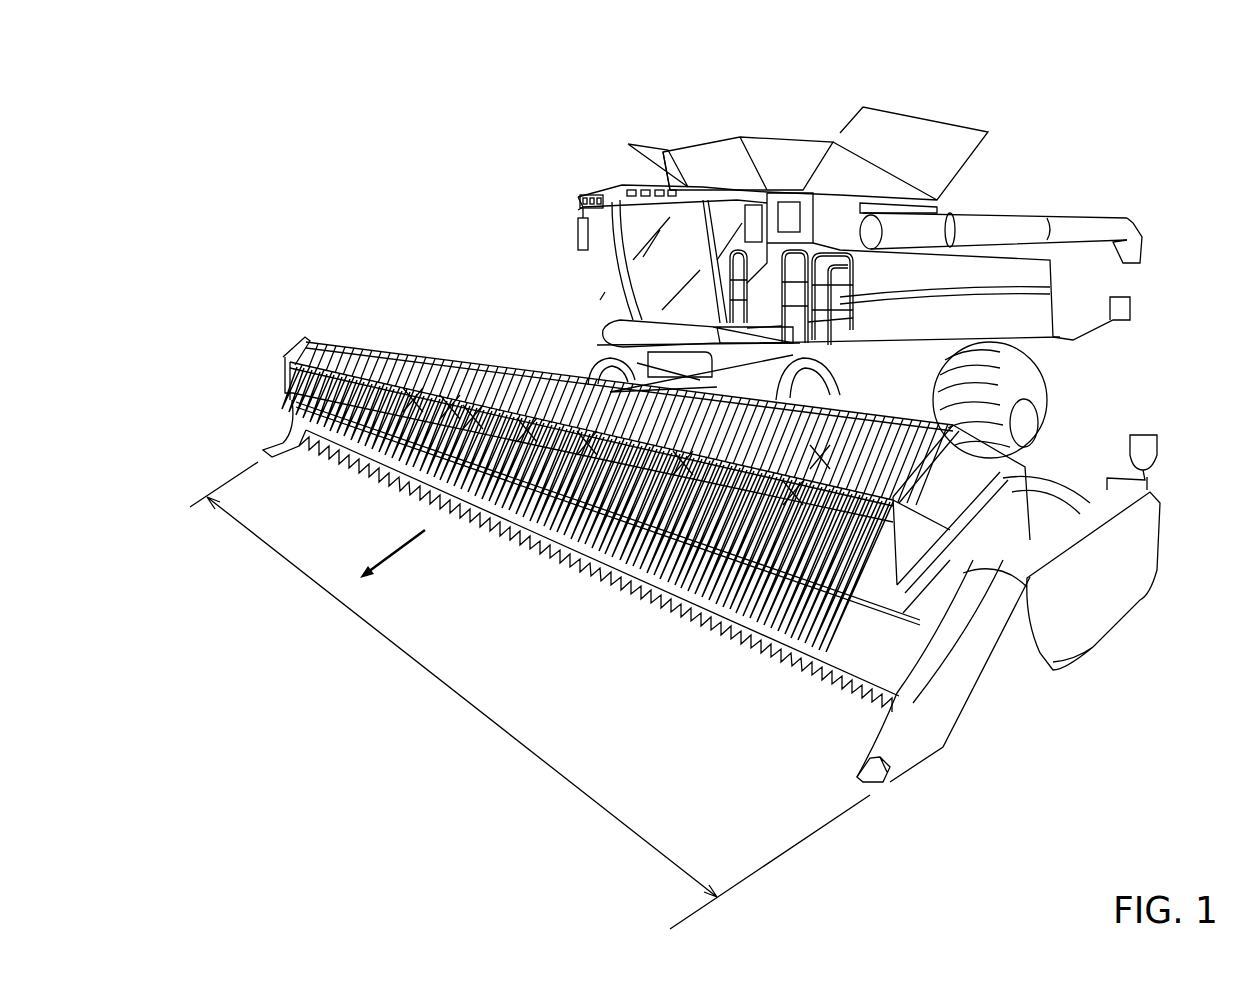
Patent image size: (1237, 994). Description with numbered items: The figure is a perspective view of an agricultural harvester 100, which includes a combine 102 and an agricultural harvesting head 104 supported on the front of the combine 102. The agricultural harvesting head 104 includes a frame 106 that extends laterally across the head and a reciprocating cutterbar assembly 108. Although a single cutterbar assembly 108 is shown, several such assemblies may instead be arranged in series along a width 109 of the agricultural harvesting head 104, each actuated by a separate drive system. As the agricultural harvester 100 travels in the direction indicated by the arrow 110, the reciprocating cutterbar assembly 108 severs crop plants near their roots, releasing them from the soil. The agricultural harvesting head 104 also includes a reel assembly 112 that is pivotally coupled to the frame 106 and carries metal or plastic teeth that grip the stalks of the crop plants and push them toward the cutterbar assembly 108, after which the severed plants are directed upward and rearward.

The agricultural harvester 100 is at (262, 118).
The combine 102 is at (620, 272).
The agricultural harvesting head 104 is at (512, 612).
The frame 106 is at (987, 693).
The reciprocating cutterbar assembly 108 is at (680, 612).
The width 109 is at (376, 628).
The arrow 110 is at (395, 545).
The reel assembly 112 is at (398, 345).